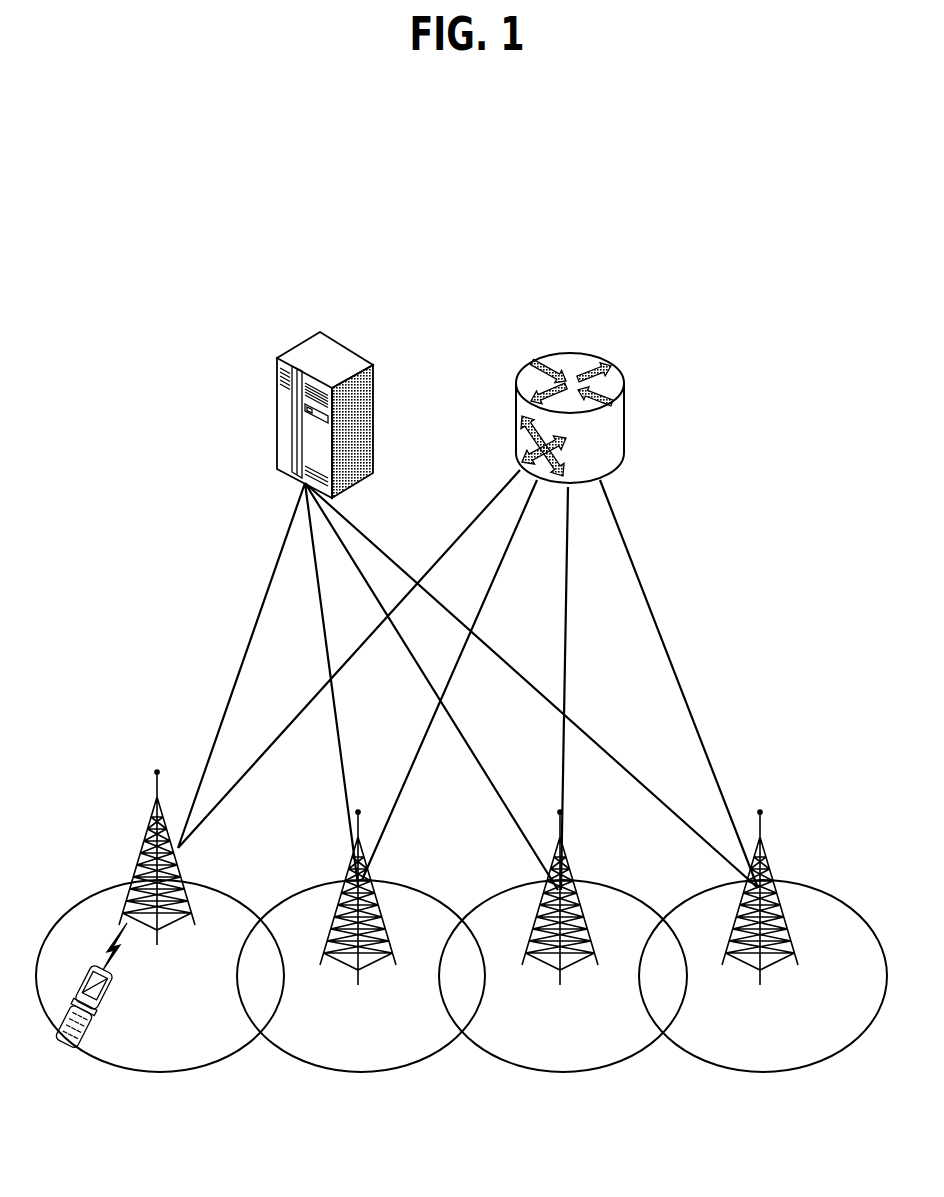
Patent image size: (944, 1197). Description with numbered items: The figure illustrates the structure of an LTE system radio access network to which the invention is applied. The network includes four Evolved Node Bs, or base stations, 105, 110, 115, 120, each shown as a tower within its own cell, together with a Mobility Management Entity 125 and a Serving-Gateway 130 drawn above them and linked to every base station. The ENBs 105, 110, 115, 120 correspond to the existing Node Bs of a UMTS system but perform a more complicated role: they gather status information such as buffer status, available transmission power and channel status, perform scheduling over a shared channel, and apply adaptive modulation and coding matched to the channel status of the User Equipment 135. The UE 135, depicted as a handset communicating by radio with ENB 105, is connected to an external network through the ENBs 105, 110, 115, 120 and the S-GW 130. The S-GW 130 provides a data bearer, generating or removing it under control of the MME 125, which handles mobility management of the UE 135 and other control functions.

The Evolved Node B 105 is at (143, 832).
The Evolved Node B 110 is at (352, 858).
The Evolved Node B 115 is at (568, 858).
The Evolved Node B 120 is at (769, 858).
The Mobility Management Entity 125 is at (310, 353).
The Serving-Gateway 130 is at (567, 362).
The User Equipment 135 is at (107, 997).